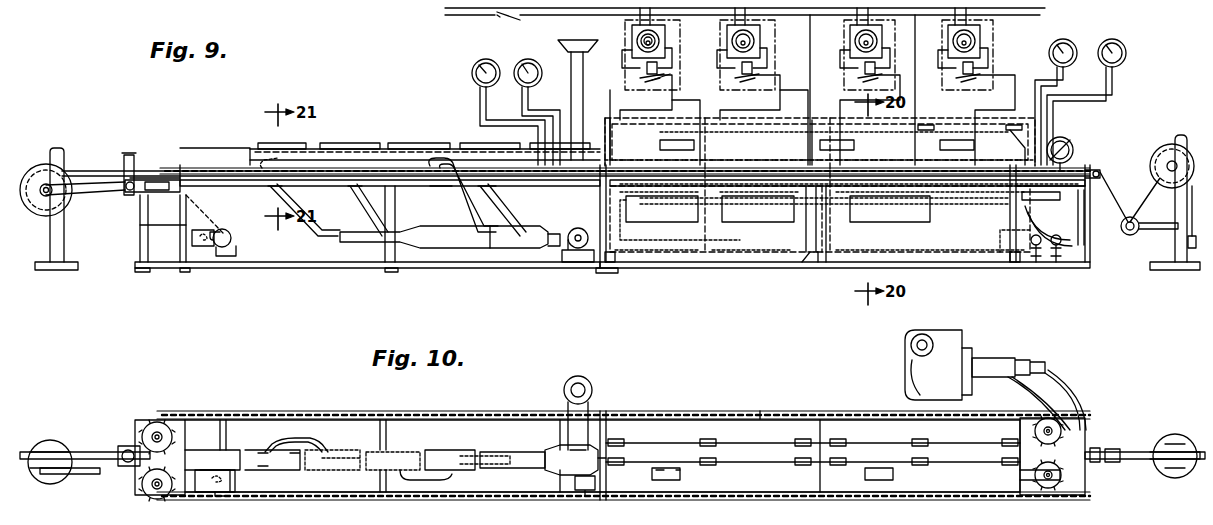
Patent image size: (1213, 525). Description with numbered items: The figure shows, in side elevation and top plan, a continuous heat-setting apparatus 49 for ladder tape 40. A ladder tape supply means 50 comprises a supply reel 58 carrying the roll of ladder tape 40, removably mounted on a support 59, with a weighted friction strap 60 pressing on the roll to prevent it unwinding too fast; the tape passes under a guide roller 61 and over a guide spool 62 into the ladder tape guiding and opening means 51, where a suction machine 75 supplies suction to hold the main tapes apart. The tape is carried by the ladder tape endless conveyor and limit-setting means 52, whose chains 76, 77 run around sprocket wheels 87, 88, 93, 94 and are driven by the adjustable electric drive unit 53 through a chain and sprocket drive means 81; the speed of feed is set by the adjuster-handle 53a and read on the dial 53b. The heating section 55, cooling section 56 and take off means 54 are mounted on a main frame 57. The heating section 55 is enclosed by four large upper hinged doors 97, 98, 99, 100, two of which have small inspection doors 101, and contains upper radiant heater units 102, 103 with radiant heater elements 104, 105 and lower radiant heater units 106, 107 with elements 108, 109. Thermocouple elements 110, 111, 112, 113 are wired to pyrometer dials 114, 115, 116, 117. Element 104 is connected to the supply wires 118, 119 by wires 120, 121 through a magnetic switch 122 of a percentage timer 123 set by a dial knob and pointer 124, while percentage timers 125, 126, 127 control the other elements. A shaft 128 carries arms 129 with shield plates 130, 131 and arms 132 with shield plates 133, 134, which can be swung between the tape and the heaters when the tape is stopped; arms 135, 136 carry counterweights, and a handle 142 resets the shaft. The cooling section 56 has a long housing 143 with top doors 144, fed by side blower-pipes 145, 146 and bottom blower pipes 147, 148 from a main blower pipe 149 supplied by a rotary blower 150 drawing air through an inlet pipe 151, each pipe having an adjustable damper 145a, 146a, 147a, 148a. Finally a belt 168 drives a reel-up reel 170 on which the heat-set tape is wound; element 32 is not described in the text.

In FIG. 9, the web guide 32 is at (165, 190).
In FIG. 9, the ladder tape 40 is at (109, 165).
In FIG. 10, the ladder tape 40 is at (102, 454).
In FIG. 9, the continuous heat-setting apparatus 49 is at (1108, 270).
In FIG. 9, the ladder tape supply means 50 is at (1147, 142).
In FIG. 9, the ladder tape guiding and opening means 51 is at (1080, 142).
In FIG. 10, the ladder tape endless conveyor and limit-setting means 52 is at (766, 412).
In FIG. 9, the endless conveyor adjustable electric drive unit 53 is at (240, 265).
In FIG. 10, the endless conveyor adjustable electric drive unit 53 is at (235, 478).
In FIG. 9, the adjuster-handle 53a is at (222, 221).
In FIG. 10, the adjuster-handle 53a is at (207, 496).
In FIG. 10, the dial 53b is at (230, 474).
In FIG. 9, the ladder tape take off means 54 is at (118, 152).
In FIG. 9, the ladder tape heating section 55 is at (720, 264).
In FIG. 9, the ladder tape cooling section 56 is at (527, 265).
In FIG. 9, the main frame 57 is at (1080, 260).
In FIG. 9, the supply reel 58 is at (1150, 160).
In FIG. 9, the support 59 is at (1176, 250).
In FIG. 9, the weighted friction strap 60 is at (1190, 140).
In FIG. 9, the guide roller 61 is at (1134, 212).
In FIG. 10, the guide roller 61 is at (1150, 446).
In FIG. 9, the guide spool 62 is at (1098, 162).
In FIG. 10, the suction machine 75 is at (952, 340).
In FIG. 10, the chain 76 is at (764, 492).
In FIG. 10, the chain 77 is at (802, 412).
In FIG. 9, the chain and sprocket drive means 81 is at (199, 218).
In FIG. 10, the sprocket wheel 87 is at (140, 482).
In FIG. 10, the sprocket wheel 88 is at (1028, 477).
In FIG. 10, the sprocket wheel 93 is at (1028, 434).
In FIG. 10, the sprocket wheel 94 is at (140, 436).
In FIG. 10, the upper hinged door 97 is at (706, 484).
In FIG. 10, the upper hinged door 98 is at (926, 484).
In FIG. 10, the upper hinged door 99 is at (870, 410).
In FIG. 10, the upper hinged door 100 is at (672, 392).
In FIG. 10, the inspection door 101 is at (668, 480).
In FIG. 9, the upper radiant heater unit 102 is at (807, 113).
In FIG. 9, the upper radiant heater unit 103 is at (828, 122).
In FIG. 9, the radiant heater element 104 is at (640, 127).
In FIG. 9, the radiant heater element 105 is at (934, 129).
In FIG. 9, the lower radiant heater unit 106 is at (796, 222).
In FIG. 9, the lower radiant heater unit 107 is at (832, 202).
In FIG. 9, the radiant heater element 108 is at (680, 205).
In FIG. 9, the radiant heater element 109 is at (892, 210).
In FIG. 9, the thermocouple element 110 is at (611, 117).
In FIG. 9, the thermocouple element 111 is at (1023, 130).
In FIG. 9, the thermocouple element 112 is at (620, 262).
In FIG. 9, the thermocouple element 113 is at (1005, 252).
In FIG. 9, the pyrometer dial 114 is at (532, 54).
In FIG. 9, the pyrometer dial 115 is at (1066, 38).
In FIG. 9, the pyrometer dial 116 is at (486, 53).
In FIG. 9, the pyrometer dial 117 is at (1110, 40).
In FIG. 9, the electric supply wire 118 is at (550, 12).
In FIG. 9, the electric supply wire 119 is at (593, 8).
In FIG. 9, the wire 120 is at (605, 102).
In FIG. 9, the wire 121 is at (690, 106).
In FIG. 9, the magnetic switch 122 is at (666, 83).
In FIG. 9, the percentage timer 123 is at (665, 66).
In FIG. 9, the dial knob and pointer 124 is at (660, 36).
In FIG. 9, the percentage timer 125 is at (823, 72).
In FIG. 9, the percentage timer 126 is at (770, 36).
In FIG. 9, the percentage timer 127 is at (995, 32).
In FIG. 9, the shaft 128 is at (945, 260).
In FIG. 9, the upwardly extending arm 129 is at (840, 246).
In FIG. 9, the shield plate 130 is at (826, 252).
In FIG. 9, the shield plate 131 is at (828, 262).
In FIG. 9, the upwardly extending arm 132 is at (622, 246).
In FIG. 9, the shield plate 133 is at (808, 252).
In FIG. 9, the shield plate 134 is at (802, 262).
In FIG. 9, the arm 135 is at (1036, 260).
In FIG. 9, the arm 136 is at (1056, 260).
In FIG. 9, the handle 142 is at (1084, 226).
In FIG. 9, the housing 143 is at (356, 158).
In FIG. 10, the housing 143 is at (362, 440).
In FIG. 9, the top door 144 is at (268, 144).
In FIG. 9, the blower-pipe 145 is at (340, 190).
In FIG. 10, the blower-pipe 145 is at (286, 442).
In FIG. 9, the adjustable damper 145a is at (292, 188).
In FIG. 9, the blower-pipe 146 is at (440, 206).
In FIG. 10, the blower-pipe 146 is at (452, 478).
In FIG. 9, the adjustable damper 146a is at (440, 191).
In FIG. 9, the blower pipe 147 is at (362, 215).
In FIG. 9, the adjustable damper 147a is at (350, 189).
In FIG. 9, the blower pipe 148 is at (506, 208).
In FIG. 9, the adjustable damper 148a is at (488, 188).
In FIG. 9, the main blower pipe 149 is at (490, 222).
In FIG. 9, the rotary blower 150 is at (571, 226).
In FIG. 9, the inlet pipe 151 is at (568, 44).
In FIG. 10, the inlet pipe 151 is at (565, 389).
In FIG. 9, the belt 168 is at (102, 190).
In FIG. 10, the belt 168 is at (96, 472).
In FIG. 9, the reel-up reel 170 is at (44, 164).
In FIG. 10, the reel-up reel 170 is at (36, 452).